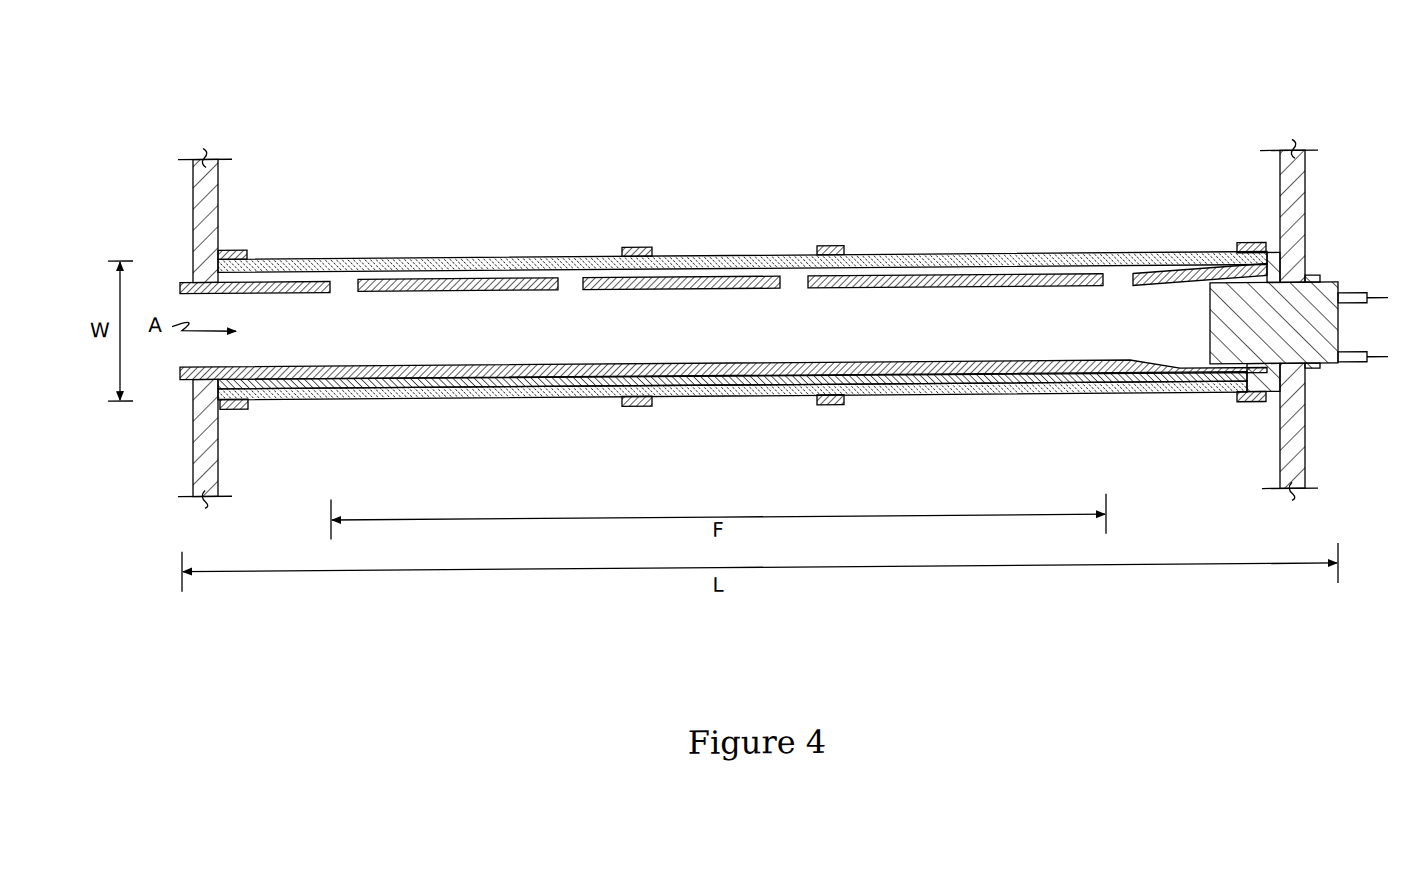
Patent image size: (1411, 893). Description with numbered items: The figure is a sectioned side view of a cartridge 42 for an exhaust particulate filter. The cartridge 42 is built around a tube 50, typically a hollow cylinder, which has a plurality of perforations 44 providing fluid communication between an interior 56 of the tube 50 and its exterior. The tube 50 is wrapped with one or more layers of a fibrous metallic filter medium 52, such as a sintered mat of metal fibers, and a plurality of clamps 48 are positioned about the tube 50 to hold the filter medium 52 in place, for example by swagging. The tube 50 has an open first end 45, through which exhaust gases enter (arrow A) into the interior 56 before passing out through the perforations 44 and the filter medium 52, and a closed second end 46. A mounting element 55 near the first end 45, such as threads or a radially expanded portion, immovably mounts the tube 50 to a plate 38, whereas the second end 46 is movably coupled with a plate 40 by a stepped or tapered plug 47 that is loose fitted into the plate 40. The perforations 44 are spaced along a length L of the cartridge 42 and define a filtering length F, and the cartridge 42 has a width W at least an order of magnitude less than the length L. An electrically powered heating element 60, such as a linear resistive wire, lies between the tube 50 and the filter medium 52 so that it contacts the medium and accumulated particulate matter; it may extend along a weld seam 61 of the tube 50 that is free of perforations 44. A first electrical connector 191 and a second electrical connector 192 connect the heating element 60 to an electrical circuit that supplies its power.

The plate 38 is at (214, 238).
The plate 40 is at (1297, 180).
The cartridge 42 is at (405, 166).
The perforations 44 is at (333, 297).
The first end 45 is at (191, 305).
The second end 46 is at (1344, 326).
The plug 47 is at (1328, 292).
The clamps 48 is at (623, 252).
The tube 50 is at (432, 368).
The fibrous metallic filter medium 52 is at (355, 262).
The mounting element 55 is at (208, 279).
The interior 56 is at (732, 387).
The heating element 60 is at (338, 403).
The weld seam 61 is at (470, 378).
The first electrical connector 191 is at (1355, 303).
The second electrical connector 192 is at (1358, 373).